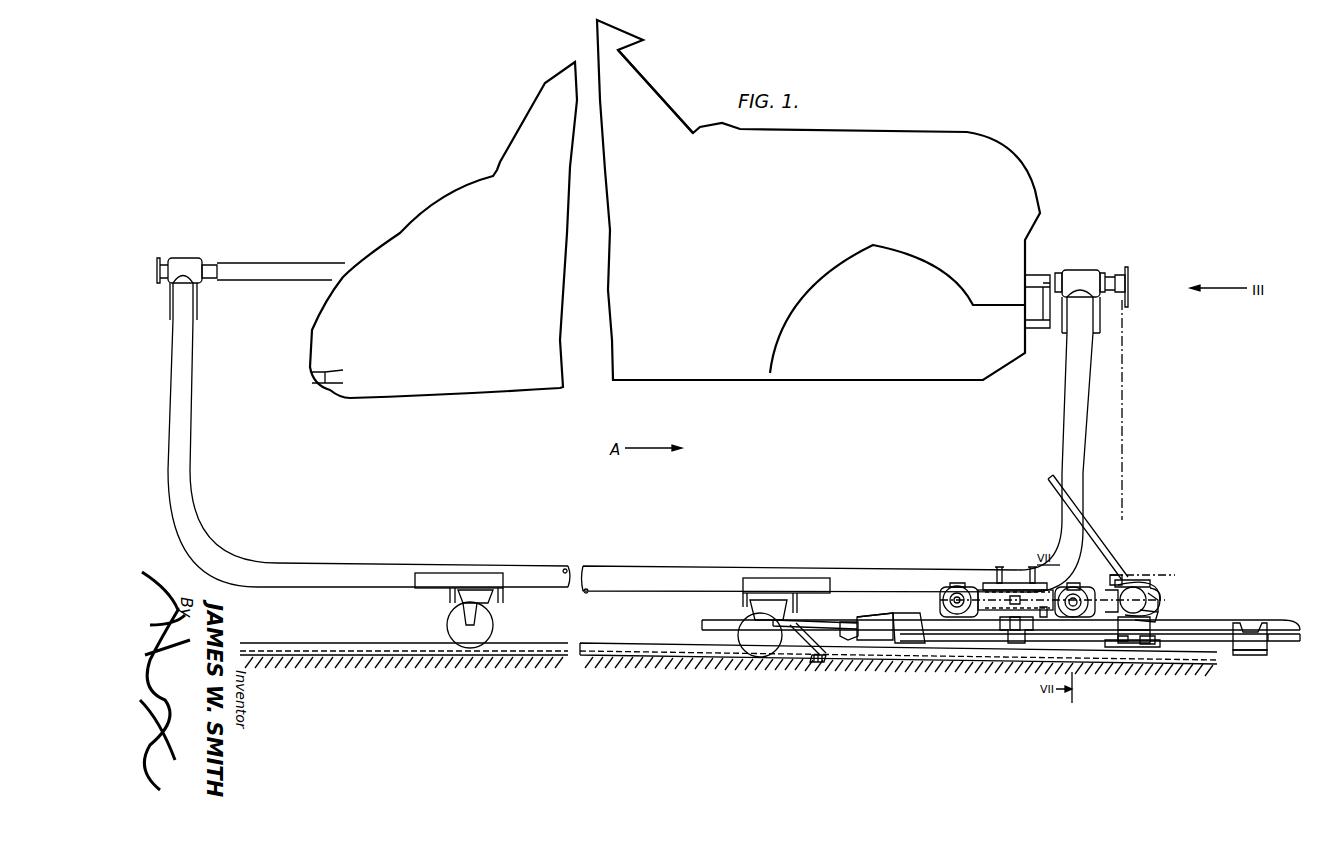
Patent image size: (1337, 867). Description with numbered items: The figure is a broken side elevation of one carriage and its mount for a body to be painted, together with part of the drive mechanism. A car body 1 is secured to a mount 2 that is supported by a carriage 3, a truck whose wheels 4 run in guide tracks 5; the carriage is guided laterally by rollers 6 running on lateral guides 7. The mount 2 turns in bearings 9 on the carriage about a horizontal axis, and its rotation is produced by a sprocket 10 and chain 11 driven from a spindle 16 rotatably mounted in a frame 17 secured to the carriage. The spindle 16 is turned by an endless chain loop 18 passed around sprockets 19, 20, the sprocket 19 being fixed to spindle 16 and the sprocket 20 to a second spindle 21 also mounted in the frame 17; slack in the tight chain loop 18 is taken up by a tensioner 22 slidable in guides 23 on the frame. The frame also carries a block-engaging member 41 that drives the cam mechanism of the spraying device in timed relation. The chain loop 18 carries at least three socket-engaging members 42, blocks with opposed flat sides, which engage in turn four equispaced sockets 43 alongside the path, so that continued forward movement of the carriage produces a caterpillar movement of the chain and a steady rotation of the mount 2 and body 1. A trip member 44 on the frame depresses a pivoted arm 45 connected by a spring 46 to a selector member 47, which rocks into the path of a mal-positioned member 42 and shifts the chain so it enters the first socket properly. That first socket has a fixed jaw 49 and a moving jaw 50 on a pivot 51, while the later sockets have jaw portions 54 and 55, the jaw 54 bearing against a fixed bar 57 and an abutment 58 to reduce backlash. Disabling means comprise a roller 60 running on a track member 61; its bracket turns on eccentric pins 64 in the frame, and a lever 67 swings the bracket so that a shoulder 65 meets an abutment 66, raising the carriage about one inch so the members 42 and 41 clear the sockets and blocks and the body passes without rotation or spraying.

The car body 1 is at (475, 193).
The mount 2 is at (238, 270).
The carriage 3 is at (195, 525).
The wheels 4 is at (455, 624).
The guide tracks 5 is at (238, 645).
The rollers 6 is at (1120, 580).
The lateral guides 7 is at (1167, 565).
The bearings 9 is at (183, 263).
The sprocket 10 is at (1128, 300).
The chain 11 is at (1125, 336).
The spindle 16 is at (1070, 607).
The frame 17 is at (972, 607).
The endless chain loop 18 is at (985, 570).
The sprocket 19 is at (1072, 583).
The sprocket 20 is at (958, 590).
The second spindle 21 is at (953, 596).
The tensioner 22 is at (1016, 598).
The guides 23 is at (1007, 570).
The block-engaging member 41 is at (1023, 596).
The socket-engaging members 42 is at (998, 568).
The sockets 43 is at (1000, 645).
The trip member 44 is at (1043, 607).
The pivoted arm 45 is at (833, 620).
The spring 46 is at (818, 662).
The selector member 47 is at (792, 628).
The fixed jaw 49 is at (907, 617).
The moving jaw 50 is at (867, 627).
The pivot 51 is at (853, 636).
The jaw portion 54 is at (1120, 600).
The jaw portion 55 is at (1180, 617).
The fixed bar 57 is at (1130, 643).
The abutment 58 is at (1120, 638).
The roller 60 is at (1157, 603).
The track member 61 is at (937, 632).
The pins 64 is at (1158, 612).
The shoulder 65 is at (1155, 640).
The abutment 66 is at (1157, 593).
The lever 67 is at (1092, 533).